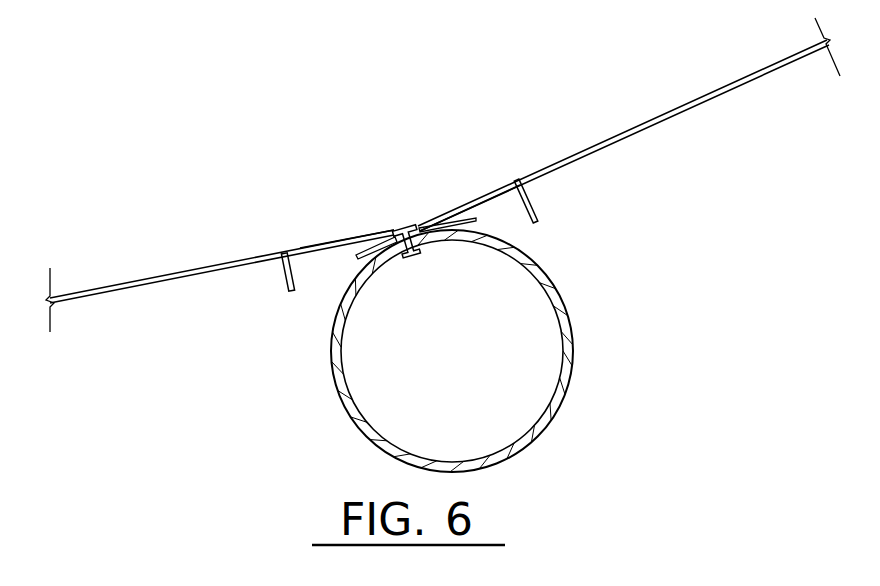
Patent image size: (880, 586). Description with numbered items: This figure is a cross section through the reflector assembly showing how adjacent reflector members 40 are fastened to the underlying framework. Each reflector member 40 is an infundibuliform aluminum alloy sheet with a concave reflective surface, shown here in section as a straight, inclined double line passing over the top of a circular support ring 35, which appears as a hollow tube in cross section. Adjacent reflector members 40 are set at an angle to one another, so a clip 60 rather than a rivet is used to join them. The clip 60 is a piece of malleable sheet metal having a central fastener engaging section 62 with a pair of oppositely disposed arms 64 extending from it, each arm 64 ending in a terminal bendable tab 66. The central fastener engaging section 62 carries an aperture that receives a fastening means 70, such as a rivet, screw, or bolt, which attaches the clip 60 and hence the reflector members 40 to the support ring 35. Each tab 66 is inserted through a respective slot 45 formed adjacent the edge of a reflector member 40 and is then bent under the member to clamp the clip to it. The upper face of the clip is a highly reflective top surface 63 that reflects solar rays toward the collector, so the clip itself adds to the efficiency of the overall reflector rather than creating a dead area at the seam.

The support ring 35 is at (578, 340).
The reflector member 40 is at (141, 278).
The slot 45 is at (518, 174).
The clip 60 is at (489, 188).
The central fastener engaging section 62 is at (424, 226).
The reflective top surface 63 is at (375, 233).
The arm 64 is at (327, 241).
The bendable tab 66 is at (280, 273).
The fastening means 70 is at (406, 226).